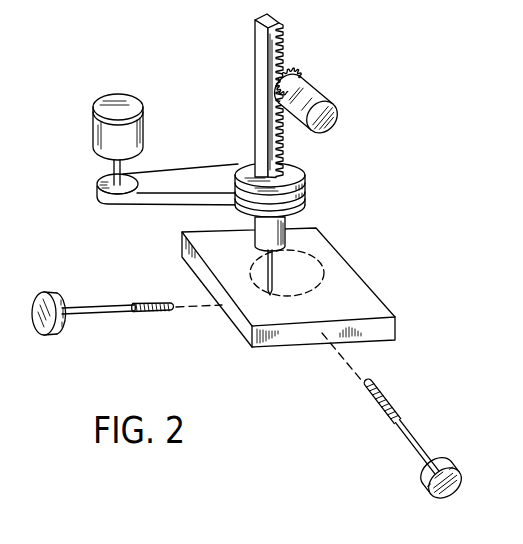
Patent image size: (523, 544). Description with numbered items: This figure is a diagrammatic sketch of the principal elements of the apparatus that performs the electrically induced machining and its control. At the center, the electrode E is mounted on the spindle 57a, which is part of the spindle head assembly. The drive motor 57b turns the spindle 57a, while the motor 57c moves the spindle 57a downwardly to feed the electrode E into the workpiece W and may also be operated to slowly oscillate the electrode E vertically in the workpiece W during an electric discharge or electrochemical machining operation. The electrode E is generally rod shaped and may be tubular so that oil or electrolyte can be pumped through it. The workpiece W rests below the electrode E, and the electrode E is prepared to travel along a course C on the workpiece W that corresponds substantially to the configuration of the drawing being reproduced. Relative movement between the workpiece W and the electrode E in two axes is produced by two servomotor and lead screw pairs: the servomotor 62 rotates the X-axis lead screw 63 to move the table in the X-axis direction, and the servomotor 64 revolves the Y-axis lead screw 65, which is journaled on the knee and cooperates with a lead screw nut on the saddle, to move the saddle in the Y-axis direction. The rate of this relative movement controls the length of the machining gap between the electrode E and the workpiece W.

The spindle 57a is at (300, 216).
The drive motor 57b is at (92, 129).
The motor 57c is at (327, 93).
The servomotor 62 is at (43, 333).
The X-axis lead screw 63 is at (150, 314).
The servomotor 64 is at (417, 487).
The Y-axis lead screw 65 is at (380, 417).
The course C is at (322, 274).
The electrode E is at (273, 265).
The workpiece W is at (374, 308).